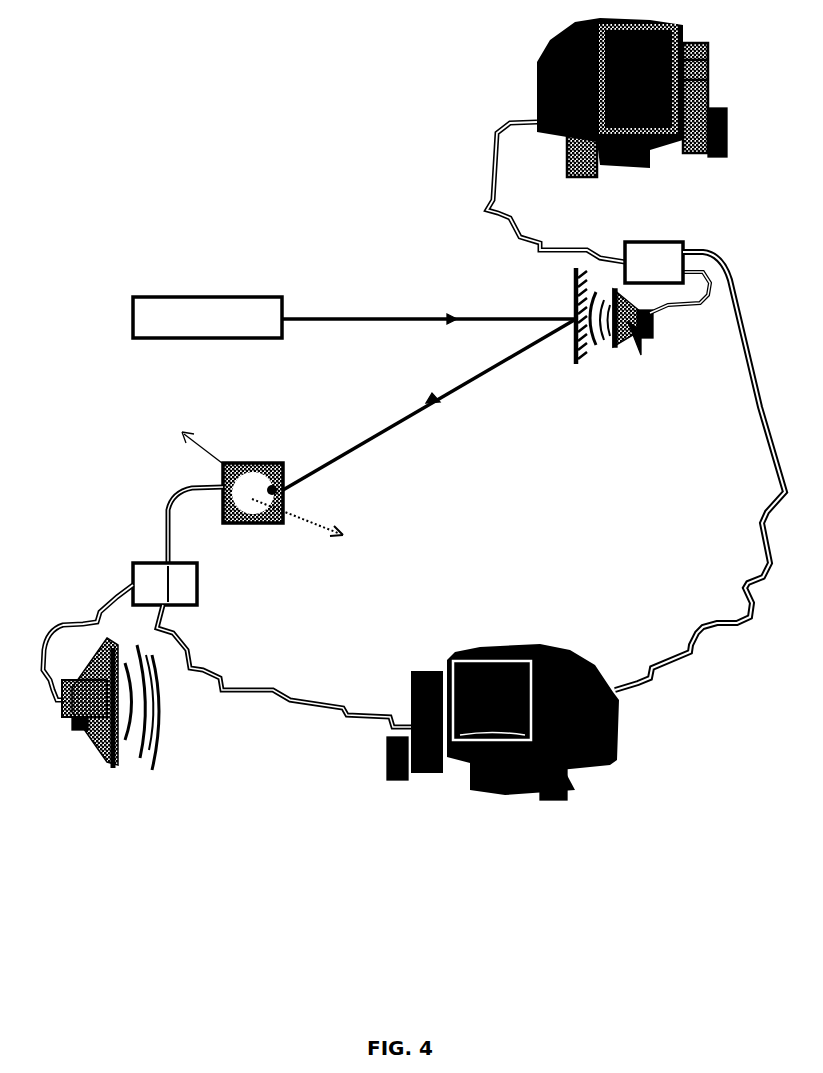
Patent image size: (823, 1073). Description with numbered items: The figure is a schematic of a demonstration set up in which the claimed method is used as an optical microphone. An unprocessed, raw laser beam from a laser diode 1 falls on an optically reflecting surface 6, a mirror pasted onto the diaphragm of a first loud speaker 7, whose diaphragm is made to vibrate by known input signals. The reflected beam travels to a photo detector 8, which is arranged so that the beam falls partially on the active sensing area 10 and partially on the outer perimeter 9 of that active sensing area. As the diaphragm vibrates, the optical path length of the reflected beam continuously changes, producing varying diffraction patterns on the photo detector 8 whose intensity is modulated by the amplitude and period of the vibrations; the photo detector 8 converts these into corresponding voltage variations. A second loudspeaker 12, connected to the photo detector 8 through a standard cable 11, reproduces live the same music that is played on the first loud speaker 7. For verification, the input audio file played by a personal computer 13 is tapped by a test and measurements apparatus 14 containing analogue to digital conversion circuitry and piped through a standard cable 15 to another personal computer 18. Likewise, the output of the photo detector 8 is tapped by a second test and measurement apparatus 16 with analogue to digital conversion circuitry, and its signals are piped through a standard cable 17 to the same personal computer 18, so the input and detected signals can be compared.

The laser diode 1 is at (207, 317).
The optically reflecting surface 6 is at (571, 336).
The loud speaker 7 is at (650, 314).
The photo detector 8 is at (253, 475).
The outer perimeter of the active sensing area 9 is at (196, 430).
The active sensing area 10 is at (317, 525).
The standard cable 11 is at (73, 642).
The second loudspeaker 12 is at (107, 704).
The personal computer 13 is at (607, 140).
The test and measurements apparatus 14 is at (654, 262).
The standard cable 15 is at (700, 471).
The test and measurement apparatus 16 is at (165, 584).
The standard cable 17 is at (285, 666).
The personal computer 18 is at (503, 729).